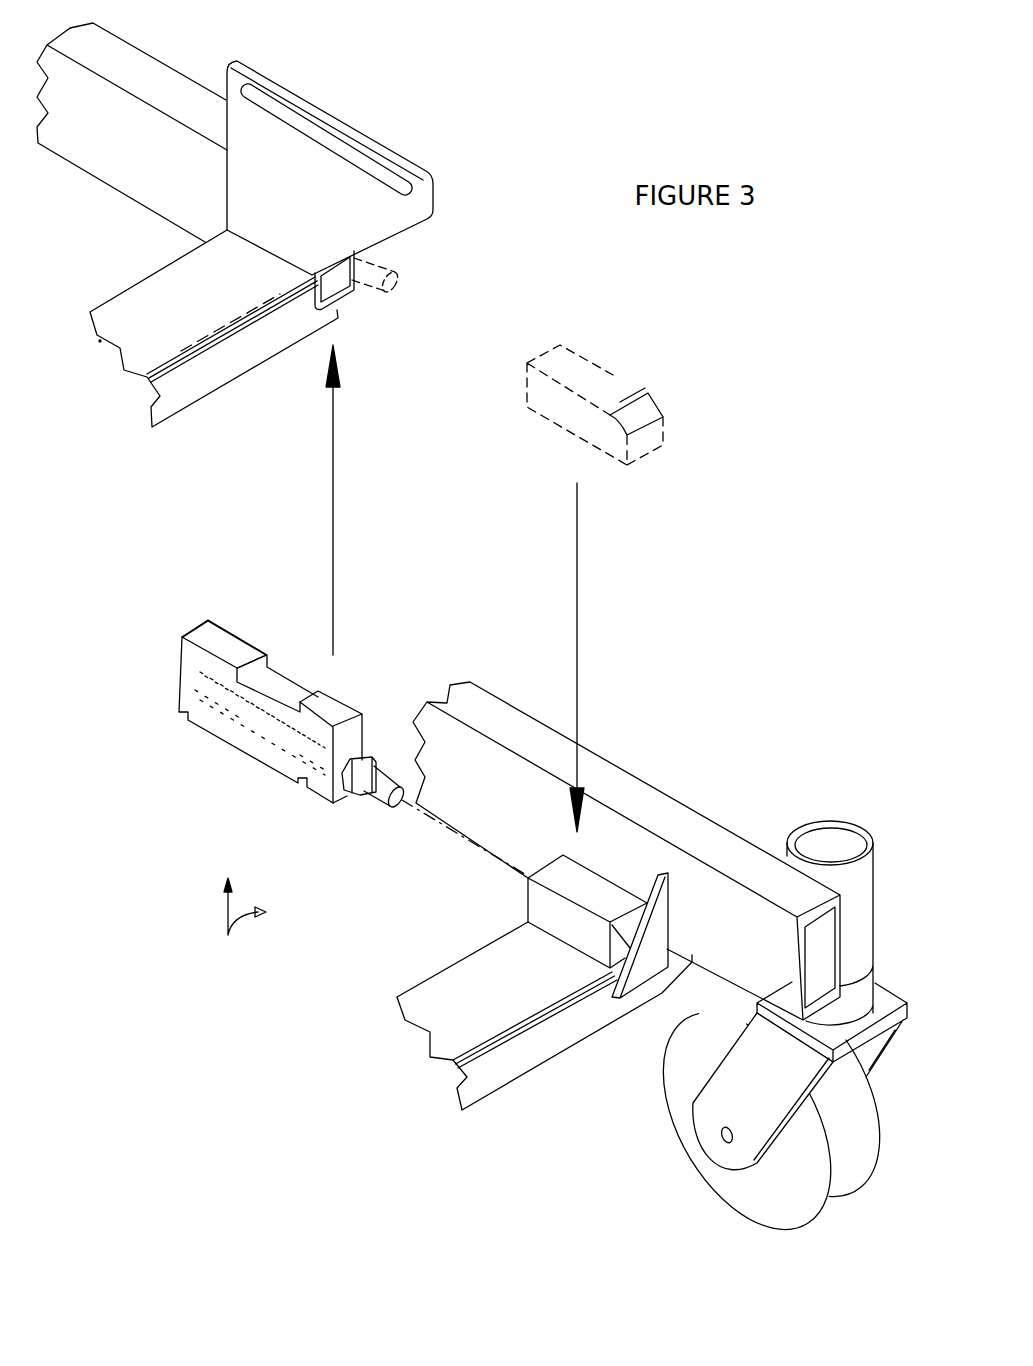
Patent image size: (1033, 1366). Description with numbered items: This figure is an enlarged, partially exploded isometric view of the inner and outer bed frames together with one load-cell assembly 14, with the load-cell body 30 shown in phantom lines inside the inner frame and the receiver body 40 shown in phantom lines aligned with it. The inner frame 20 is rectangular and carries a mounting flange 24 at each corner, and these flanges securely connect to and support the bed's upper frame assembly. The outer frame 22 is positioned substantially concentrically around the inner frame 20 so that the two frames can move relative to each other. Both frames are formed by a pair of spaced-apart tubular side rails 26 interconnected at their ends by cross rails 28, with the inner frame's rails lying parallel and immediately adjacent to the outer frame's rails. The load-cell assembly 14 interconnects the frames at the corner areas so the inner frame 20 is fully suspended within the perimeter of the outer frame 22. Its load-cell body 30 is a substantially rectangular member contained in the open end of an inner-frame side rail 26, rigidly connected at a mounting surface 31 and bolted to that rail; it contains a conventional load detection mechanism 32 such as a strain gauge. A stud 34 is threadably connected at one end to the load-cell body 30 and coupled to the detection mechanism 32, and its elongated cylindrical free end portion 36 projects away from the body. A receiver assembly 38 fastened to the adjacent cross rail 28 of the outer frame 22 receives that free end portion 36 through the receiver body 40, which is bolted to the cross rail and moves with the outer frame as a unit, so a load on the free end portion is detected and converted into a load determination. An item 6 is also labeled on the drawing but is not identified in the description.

The cart frame 6 is at (200, 102).
The load-cell assembly 14 is at (239, 921).
The inner frame 20 is at (189, 61).
The outer frame 22 is at (692, 795).
The mounting flange 24 is at (403, 147).
The side rail 26 is at (620, 777).
The cross rail 28 is at (210, 365).
The load-cell body 30 is at (353, 307).
The mounting surface 31 is at (218, 637).
The load detection mechanism 32 is at (263, 772).
The stud 34 is at (353, 290).
The free end portion 36 is at (387, 280).
The receiver assembly 38 is at (612, 372).
The receiver body 40 is at (652, 390).